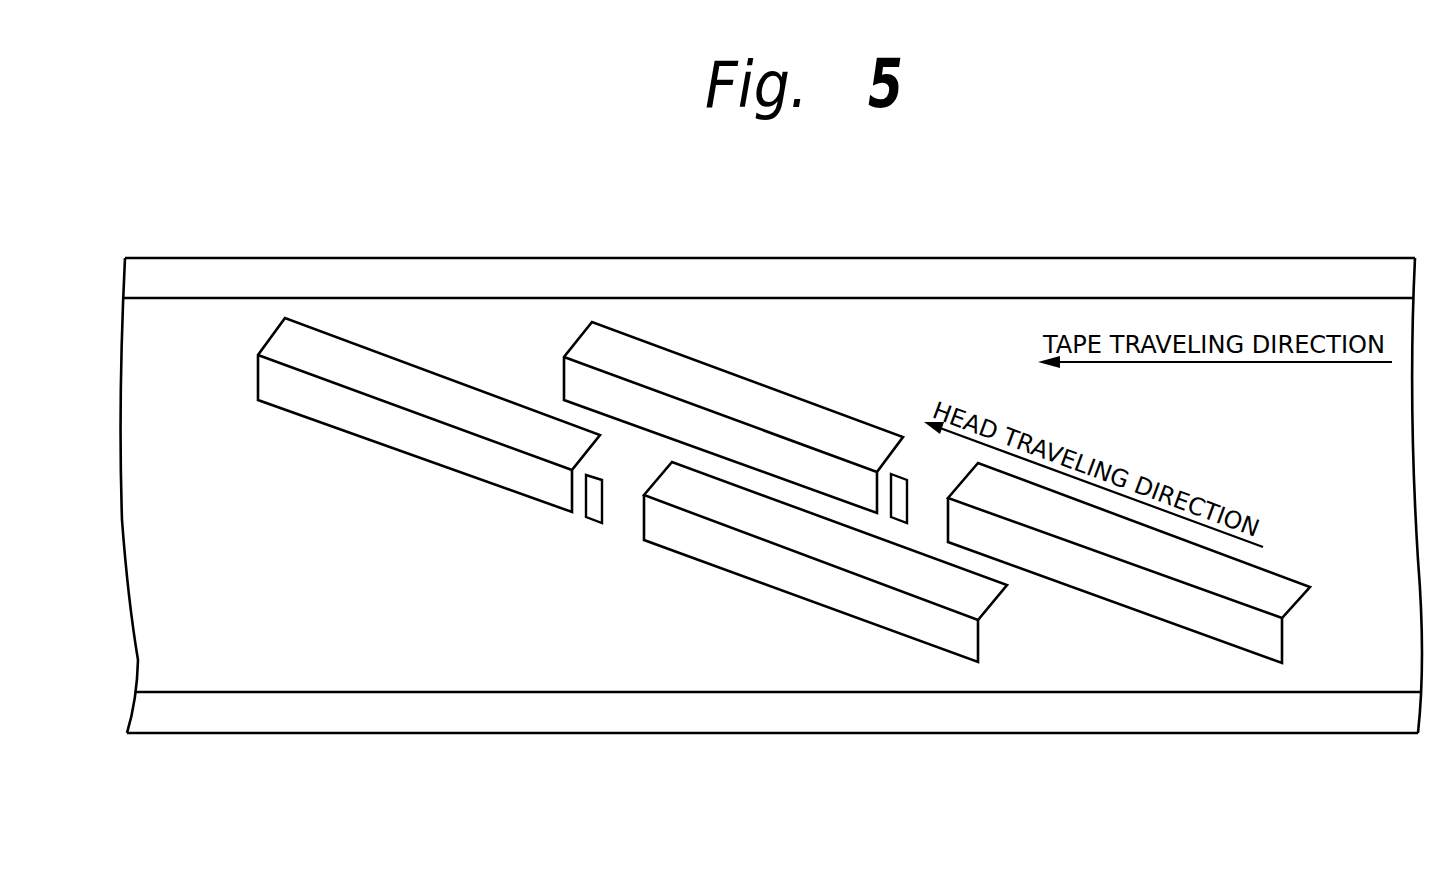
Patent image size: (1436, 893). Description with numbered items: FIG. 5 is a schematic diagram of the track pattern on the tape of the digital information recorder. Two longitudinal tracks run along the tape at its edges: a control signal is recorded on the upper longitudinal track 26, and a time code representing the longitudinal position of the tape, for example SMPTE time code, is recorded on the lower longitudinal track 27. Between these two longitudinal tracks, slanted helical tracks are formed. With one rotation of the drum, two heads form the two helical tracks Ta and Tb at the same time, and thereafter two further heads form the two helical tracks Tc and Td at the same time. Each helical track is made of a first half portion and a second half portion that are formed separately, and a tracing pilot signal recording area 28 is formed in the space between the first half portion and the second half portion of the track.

The upper longitudinal track 26 is at (593, 282).
The lower longitudinal track 27 is at (765, 720).
The tracing pilot signal recording area 28 is at (592, 508).
The helical track Ta is at (955, 637).
The helical track Tb is at (977, 598).
The helical track Tc is at (1258, 637).
The helical track Td is at (1297, 597).